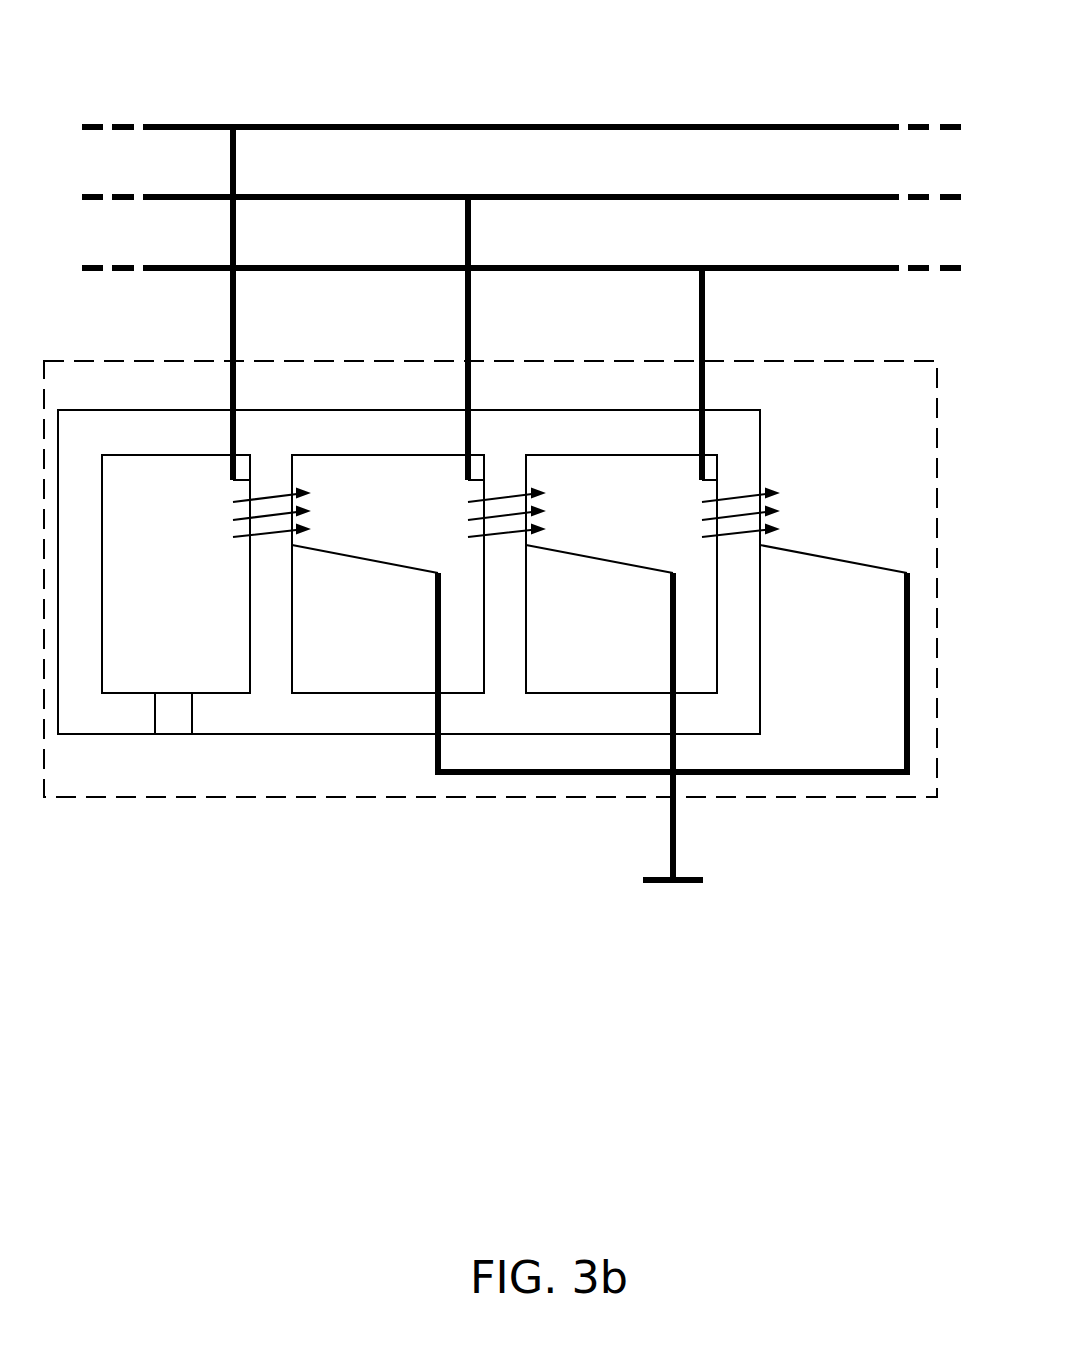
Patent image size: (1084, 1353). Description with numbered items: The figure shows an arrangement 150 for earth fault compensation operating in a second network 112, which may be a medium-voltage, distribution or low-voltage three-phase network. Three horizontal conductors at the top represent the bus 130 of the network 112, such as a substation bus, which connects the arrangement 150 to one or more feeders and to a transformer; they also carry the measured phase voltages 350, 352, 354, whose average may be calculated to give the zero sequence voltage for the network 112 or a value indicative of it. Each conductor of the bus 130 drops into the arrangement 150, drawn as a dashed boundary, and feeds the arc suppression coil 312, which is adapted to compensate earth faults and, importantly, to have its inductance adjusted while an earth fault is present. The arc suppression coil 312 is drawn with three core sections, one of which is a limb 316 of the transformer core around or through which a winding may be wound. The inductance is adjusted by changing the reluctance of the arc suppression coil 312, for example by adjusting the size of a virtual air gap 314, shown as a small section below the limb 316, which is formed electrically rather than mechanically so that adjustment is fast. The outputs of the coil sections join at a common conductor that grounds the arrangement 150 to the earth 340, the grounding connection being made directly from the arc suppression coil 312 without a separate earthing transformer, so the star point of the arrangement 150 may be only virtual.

The second network 112 is at (372, 127).
The bus 130 is at (375, 55).
The measured phase voltage 350 is at (550, 127).
The measured phase voltage 352 is at (550, 197).
The measured phase voltage 354 is at (550, 268).
The arc suppression coil 312 is at (760, 450).
The limb 316 is at (102, 604).
The virtual air gap 314 is at (175, 734).
The earth 340 is at (665, 884).
The arrangement 150 is at (907, 797).